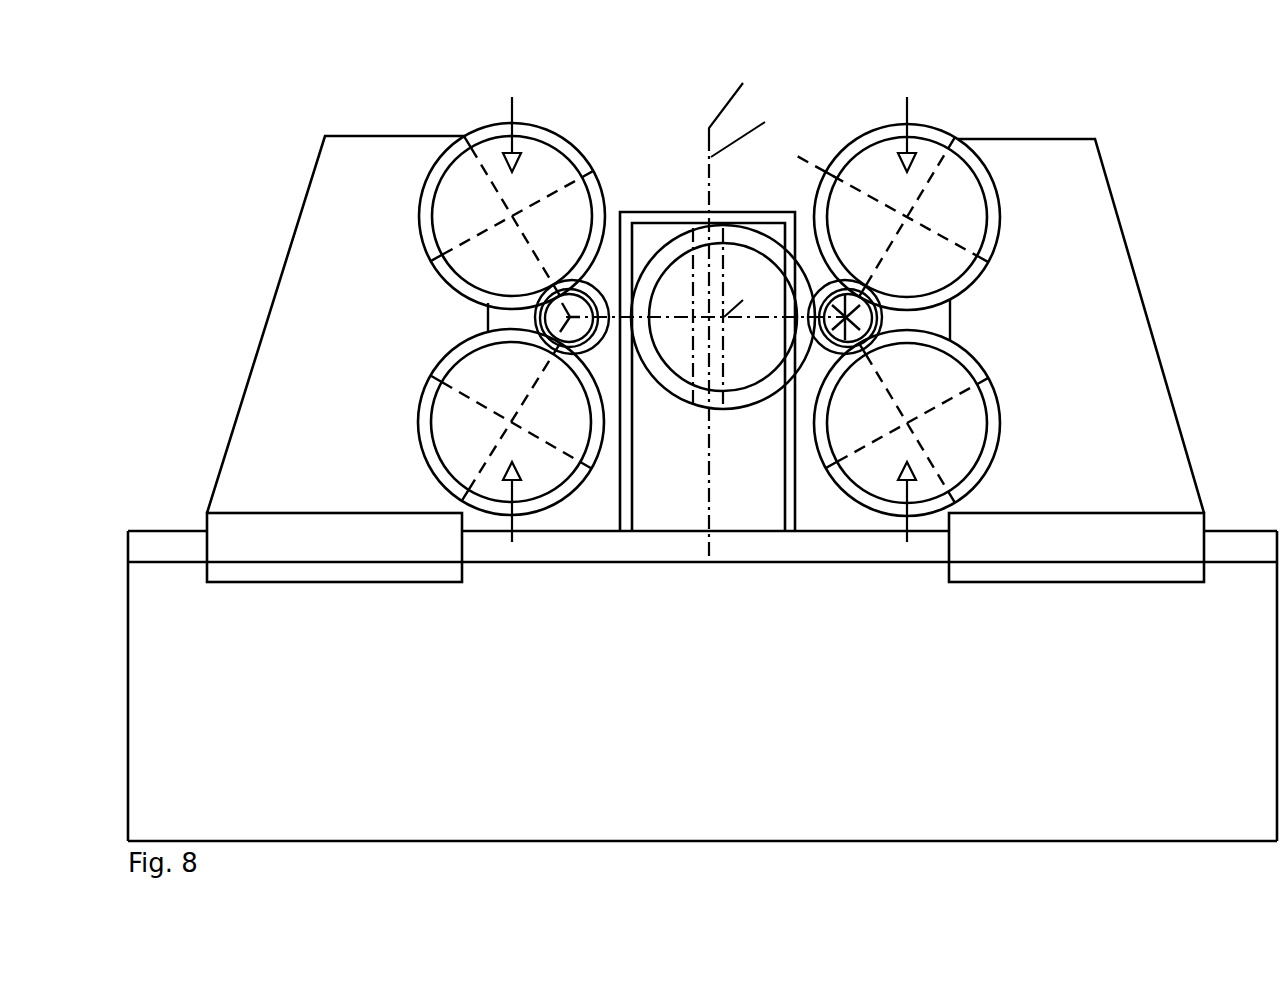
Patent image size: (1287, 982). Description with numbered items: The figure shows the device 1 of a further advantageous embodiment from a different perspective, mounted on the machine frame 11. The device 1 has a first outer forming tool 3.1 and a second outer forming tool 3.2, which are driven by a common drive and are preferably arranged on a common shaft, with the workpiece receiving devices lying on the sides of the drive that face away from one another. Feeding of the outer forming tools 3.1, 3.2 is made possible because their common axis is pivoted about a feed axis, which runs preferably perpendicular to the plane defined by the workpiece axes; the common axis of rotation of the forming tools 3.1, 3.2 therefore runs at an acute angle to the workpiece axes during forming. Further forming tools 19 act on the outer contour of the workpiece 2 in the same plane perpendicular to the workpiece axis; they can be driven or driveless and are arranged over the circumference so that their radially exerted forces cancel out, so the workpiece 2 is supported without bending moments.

The device 1 is at (300, 98).
The workpiece 2 is at (535, 318).
The first outer forming tool 3.1 is at (755, 408).
The second outer forming tool 3.2 is at (611, 268).
The machine frame 11 is at (163, 603).
The further forming tools 19 is at (420, 240).